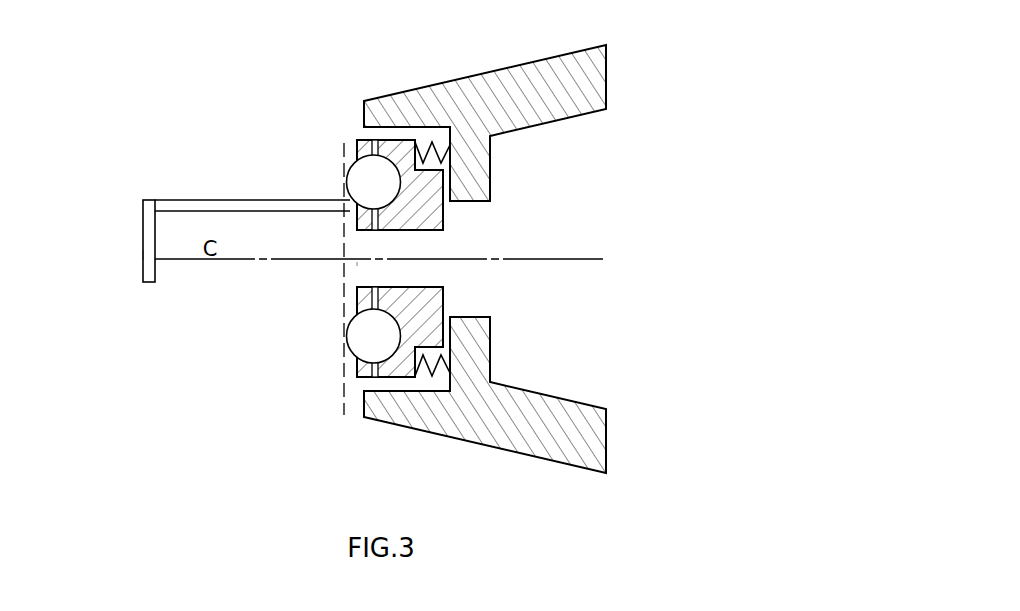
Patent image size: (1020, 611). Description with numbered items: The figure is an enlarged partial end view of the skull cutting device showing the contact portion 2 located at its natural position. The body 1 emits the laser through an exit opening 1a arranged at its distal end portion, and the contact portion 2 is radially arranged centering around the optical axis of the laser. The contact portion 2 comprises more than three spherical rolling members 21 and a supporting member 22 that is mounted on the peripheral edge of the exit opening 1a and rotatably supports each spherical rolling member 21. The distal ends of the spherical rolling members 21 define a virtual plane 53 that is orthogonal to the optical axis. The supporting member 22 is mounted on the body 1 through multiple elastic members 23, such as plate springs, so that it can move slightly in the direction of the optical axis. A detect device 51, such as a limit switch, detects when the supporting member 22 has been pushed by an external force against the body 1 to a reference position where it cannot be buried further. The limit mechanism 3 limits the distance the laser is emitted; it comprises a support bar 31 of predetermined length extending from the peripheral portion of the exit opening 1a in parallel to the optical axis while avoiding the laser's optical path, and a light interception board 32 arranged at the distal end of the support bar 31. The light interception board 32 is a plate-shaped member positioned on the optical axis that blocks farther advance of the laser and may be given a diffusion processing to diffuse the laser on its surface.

The body 1 is at (427, 85).
The exit opening 1a is at (350, 270).
The contact portion 2 is at (405, 260).
The spherical rolling member 21 is at (348, 168).
The supporting member 22 is at (447, 222).
The elastic member 23 is at (428, 392).
The limit mechanism 3 is at (232, 171).
The support bar 31 is at (188, 198).
The light interception board 32 is at (138, 232).
The detect device 51 is at (130, 258).
The virtual plane 53 is at (345, 400).